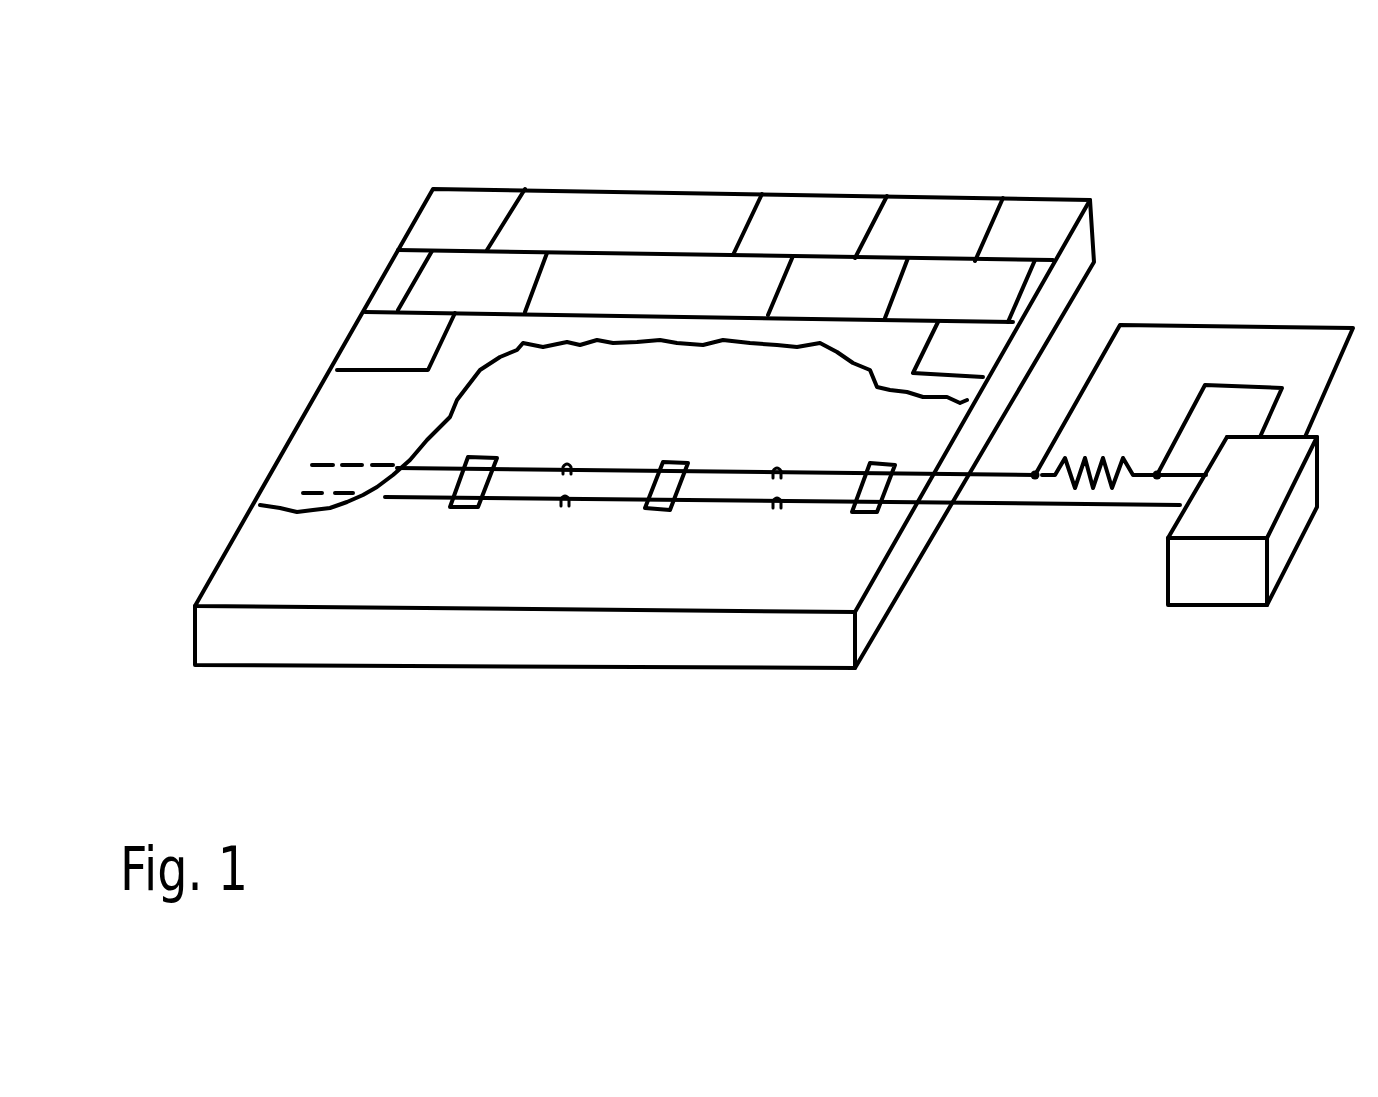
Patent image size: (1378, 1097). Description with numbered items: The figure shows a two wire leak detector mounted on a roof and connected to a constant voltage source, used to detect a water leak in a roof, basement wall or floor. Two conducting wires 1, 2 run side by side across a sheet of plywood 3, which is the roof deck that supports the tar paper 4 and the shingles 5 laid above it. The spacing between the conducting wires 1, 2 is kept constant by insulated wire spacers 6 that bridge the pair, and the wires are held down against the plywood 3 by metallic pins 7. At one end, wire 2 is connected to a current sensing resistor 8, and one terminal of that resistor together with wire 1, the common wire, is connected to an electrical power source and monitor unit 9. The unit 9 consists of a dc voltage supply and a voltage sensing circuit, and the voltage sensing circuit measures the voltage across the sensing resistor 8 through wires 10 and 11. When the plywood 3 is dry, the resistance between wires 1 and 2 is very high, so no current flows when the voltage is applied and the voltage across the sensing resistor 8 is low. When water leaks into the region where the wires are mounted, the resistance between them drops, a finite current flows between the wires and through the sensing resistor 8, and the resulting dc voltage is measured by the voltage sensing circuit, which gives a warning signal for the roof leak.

The conducting wire 1 is at (1015, 518).
The conducting wire 2 is at (1013, 465).
The plywood 3 is at (1103, 240).
The tar paper 4 is at (865, 340).
The shingles 5 is at (802, 207).
The insulated wire spacers 6 is at (468, 520).
The metallic pins 7 is at (568, 466).
The current sensing resistor 8 is at (1115, 450).
The electrical power source and monitor unit 9 is at (1232, 615).
The wire 10 is at (1218, 312).
The wire 11 is at (1265, 377).